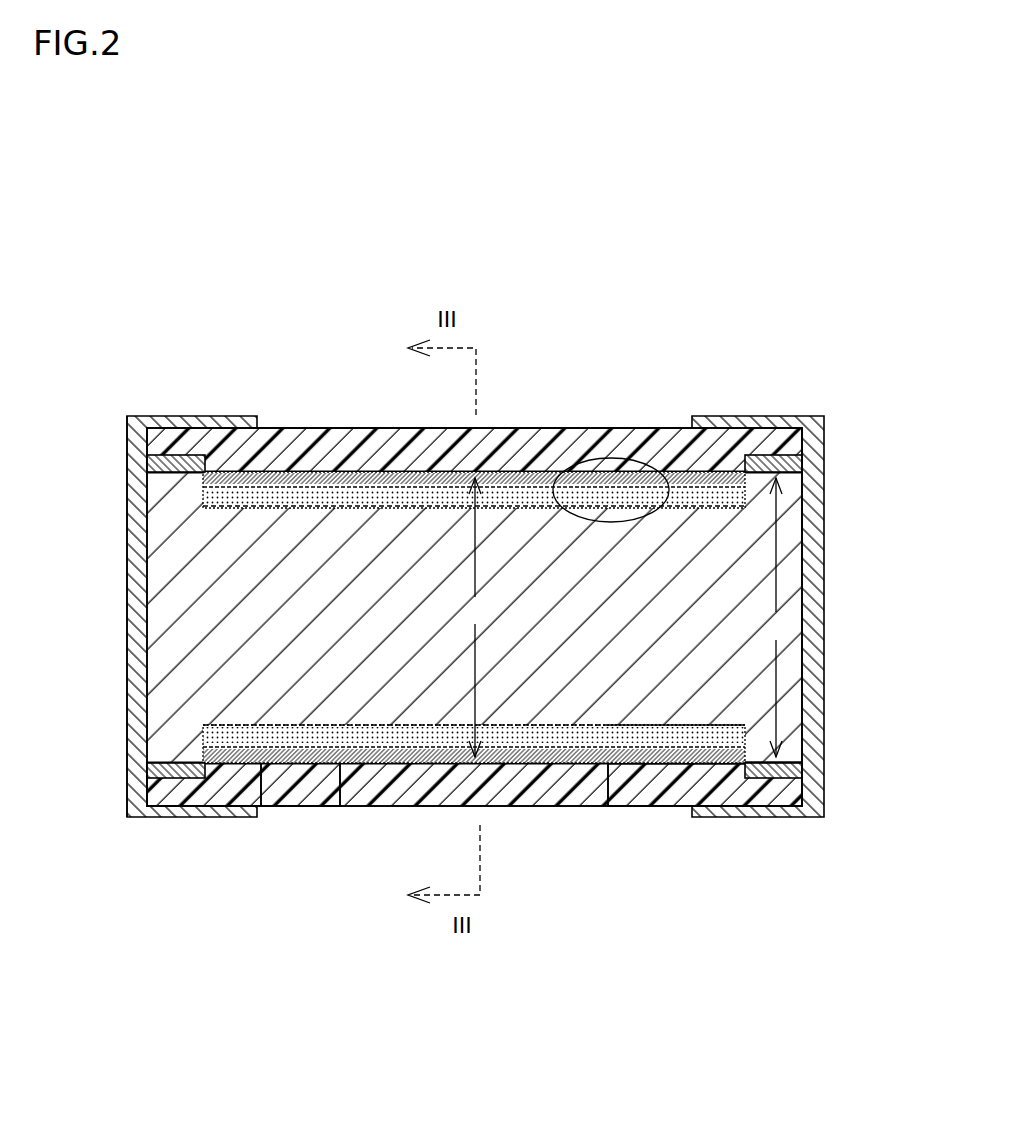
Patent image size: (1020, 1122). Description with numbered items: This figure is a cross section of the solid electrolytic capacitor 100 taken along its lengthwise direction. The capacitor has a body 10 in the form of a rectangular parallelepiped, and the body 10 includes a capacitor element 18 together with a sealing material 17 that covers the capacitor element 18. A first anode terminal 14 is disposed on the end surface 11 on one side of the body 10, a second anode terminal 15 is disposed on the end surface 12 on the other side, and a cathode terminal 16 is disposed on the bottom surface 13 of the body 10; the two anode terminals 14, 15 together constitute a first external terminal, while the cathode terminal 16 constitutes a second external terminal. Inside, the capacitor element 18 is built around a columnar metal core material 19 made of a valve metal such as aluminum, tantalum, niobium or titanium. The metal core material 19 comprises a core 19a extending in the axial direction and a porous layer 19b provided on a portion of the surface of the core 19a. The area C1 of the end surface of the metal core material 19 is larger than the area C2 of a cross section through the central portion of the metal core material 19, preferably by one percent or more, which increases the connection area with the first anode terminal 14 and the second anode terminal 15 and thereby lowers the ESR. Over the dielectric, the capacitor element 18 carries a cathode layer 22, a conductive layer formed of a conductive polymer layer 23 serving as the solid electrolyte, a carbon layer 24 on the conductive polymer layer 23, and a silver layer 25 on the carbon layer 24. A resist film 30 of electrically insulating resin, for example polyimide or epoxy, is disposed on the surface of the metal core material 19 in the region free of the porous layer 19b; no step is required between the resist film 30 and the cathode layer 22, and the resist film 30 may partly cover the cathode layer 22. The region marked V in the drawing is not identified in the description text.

The solid electrolytic capacitor 100 is at (380, 276).
The body 10 is at (595, 427).
The end surface 11 is at (127, 615).
The end surface 12 is at (804, 580).
The bottom surface 13 is at (303, 806).
The first anode terminal 14 is at (127, 557).
The second anode terminal 15 is at (824, 540).
The cathode terminal 16 is at (359, 806).
The sealing material 17 is at (529, 427).
The capacitor element 18 is at (358, 427).
The metal core material 19 is at (474, 706).
The core 19a is at (573, 700).
The porous layer 19b is at (522, 740).
The cathode layer 22 is at (265, 806).
The conductive polymer layer 23 is at (660, 740).
The carbon layer 24 is at (700, 758).
The silver layer 25 is at (738, 764).
The resist film 30 is at (171, 457).
The void V is at (606, 458).
The area of the end surface C1 is at (777, 617).
The area of a cross section of a central portion C2 is at (472, 617).